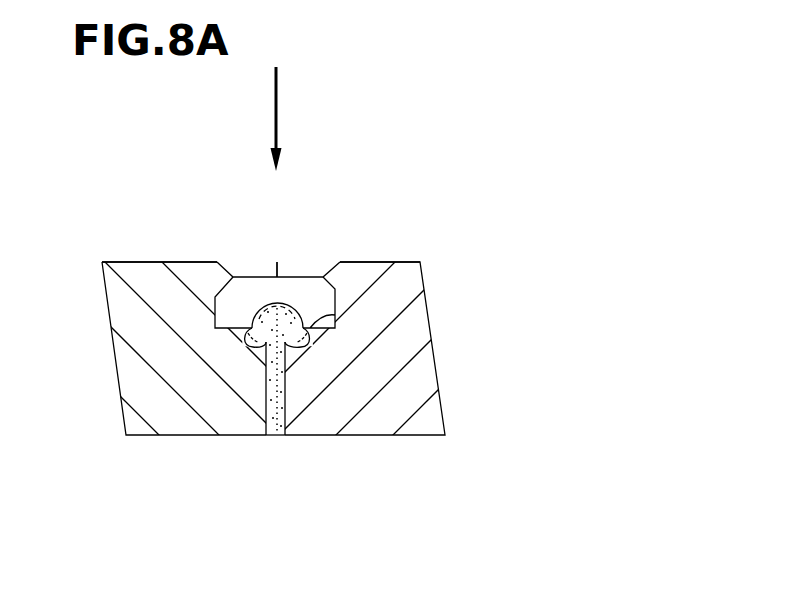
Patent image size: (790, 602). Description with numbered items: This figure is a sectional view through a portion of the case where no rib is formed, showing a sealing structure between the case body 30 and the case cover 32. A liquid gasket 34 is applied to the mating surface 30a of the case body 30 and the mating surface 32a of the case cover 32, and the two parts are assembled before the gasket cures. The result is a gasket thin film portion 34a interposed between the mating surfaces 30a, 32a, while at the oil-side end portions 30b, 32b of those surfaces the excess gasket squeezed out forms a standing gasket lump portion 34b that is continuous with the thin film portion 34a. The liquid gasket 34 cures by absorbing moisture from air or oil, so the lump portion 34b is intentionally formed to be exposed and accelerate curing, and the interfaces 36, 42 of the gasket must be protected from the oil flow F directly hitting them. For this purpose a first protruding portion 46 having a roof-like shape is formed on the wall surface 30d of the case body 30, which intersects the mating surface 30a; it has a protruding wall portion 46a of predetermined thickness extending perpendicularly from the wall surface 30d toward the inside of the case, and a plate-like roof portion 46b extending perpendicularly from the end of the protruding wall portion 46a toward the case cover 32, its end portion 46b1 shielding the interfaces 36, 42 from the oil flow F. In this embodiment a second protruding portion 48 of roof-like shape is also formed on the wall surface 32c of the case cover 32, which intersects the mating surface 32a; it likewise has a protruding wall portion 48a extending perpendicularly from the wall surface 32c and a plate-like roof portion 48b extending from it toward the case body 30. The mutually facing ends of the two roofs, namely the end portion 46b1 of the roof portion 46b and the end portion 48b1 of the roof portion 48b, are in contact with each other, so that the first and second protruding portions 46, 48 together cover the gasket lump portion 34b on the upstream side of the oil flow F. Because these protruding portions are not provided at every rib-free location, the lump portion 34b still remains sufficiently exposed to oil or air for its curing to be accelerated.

The oil flow F is at (278, 108).
The case body 30 is at (175, 387).
The mating surface of the case body 30a is at (266, 413).
The oil-side end portion of the case body mating surface 30b is at (265, 347).
The wall surface of the case body 30d is at (216, 312).
The case cover 32 is at (392, 392).
The mating surface of the case cover 32a is at (285, 415).
The oil-side end portion of the case cover mating surface 32b is at (287, 345).
The wall surface of the case cover 32c is at (337, 316).
The liquid gasket 34 is at (374, 409).
The gasket thin film portion 34a is at (271, 413).
The gasket lump portion 34b is at (304, 305).
The interface 36 is at (243, 345).
The interface 42 is at (306, 344).
The first protruding portion 46 is at (216, 223).
The protruding wall portion 46a is at (143, 260).
The roof portion 46b is at (245, 270).
The end portion of the roof portion 46b1 is at (279, 263).
The second protruding portion 48 is at (330, 223).
The protruding wall portion 48a is at (405, 270).
The roof portion 48b is at (313, 244).
The end portion of the roof portion 48b1 is at (276, 263).